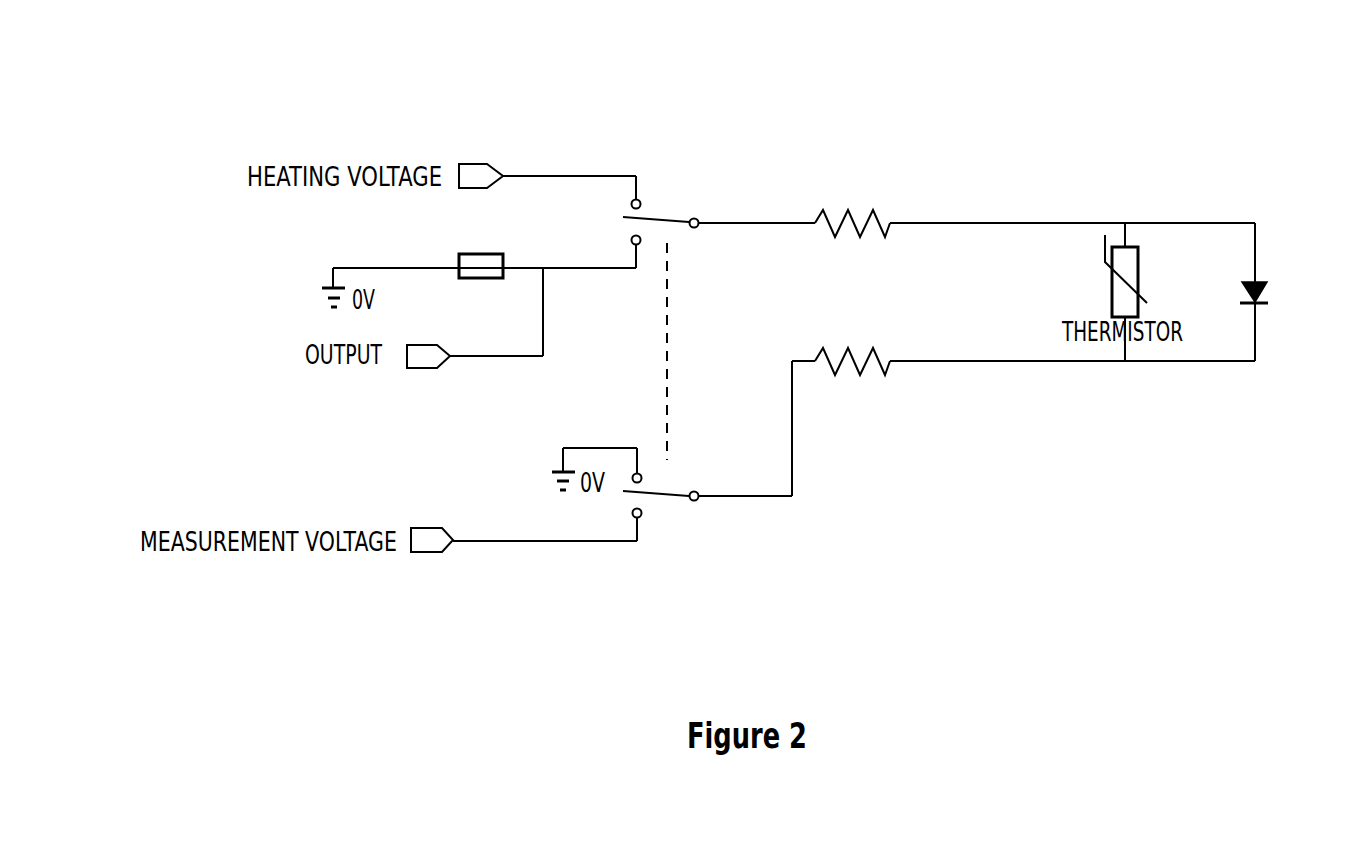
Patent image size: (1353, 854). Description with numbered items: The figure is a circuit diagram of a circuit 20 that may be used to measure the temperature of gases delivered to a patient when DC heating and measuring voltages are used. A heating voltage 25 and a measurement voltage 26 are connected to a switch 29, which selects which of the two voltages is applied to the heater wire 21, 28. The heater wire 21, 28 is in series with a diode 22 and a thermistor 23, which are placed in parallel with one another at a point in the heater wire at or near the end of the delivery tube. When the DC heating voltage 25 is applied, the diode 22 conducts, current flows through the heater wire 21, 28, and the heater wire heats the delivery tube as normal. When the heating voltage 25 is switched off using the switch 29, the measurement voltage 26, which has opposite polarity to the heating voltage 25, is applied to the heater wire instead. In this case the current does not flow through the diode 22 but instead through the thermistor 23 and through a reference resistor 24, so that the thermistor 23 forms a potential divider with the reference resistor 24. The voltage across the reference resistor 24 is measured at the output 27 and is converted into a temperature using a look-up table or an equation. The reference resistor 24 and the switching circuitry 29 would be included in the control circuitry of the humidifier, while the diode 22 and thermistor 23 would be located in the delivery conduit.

The circuit 20 is at (897, 103).
The heater wire 21 is at (852, 241).
The diode 22 is at (1267, 292).
The thermistor 23 is at (1137, 276).
The reference resistor 24 is at (481, 282).
The heating voltage 25 is at (481, 191).
The measurement voltage 26 is at (432, 555).
The output 27 is at (428, 372).
The heater wire 28 is at (852, 377).
The switch 29 is at (662, 356).